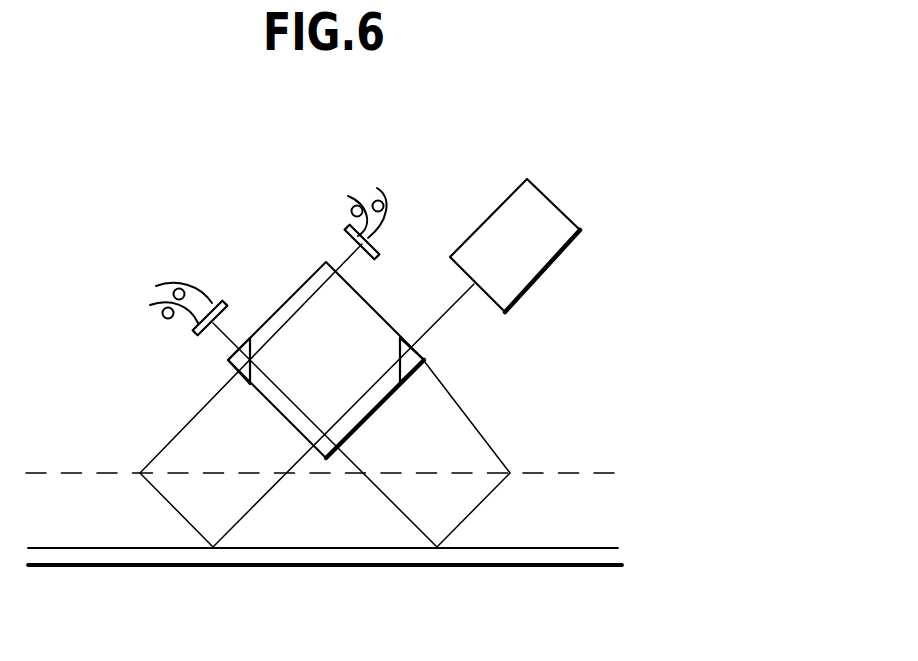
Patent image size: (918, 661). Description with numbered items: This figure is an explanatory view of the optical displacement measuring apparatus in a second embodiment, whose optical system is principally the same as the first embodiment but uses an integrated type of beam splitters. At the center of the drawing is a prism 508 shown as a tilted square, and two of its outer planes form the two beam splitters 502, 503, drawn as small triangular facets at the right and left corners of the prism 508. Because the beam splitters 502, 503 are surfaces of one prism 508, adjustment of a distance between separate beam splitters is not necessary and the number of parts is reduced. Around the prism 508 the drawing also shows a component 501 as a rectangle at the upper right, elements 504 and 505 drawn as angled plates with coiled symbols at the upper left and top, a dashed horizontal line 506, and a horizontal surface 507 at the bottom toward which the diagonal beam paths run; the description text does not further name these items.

The light receiving element 501 is at (562, 208).
The beam splitter 502 is at (421, 355).
The beam splitter 503 is at (256, 352).
The light source 504 is at (195, 334).
The light source 505 is at (378, 243).
The reference plane 506 is at (540, 472).
The object surface 507 is at (593, 553).
The prism 508 is at (318, 298).